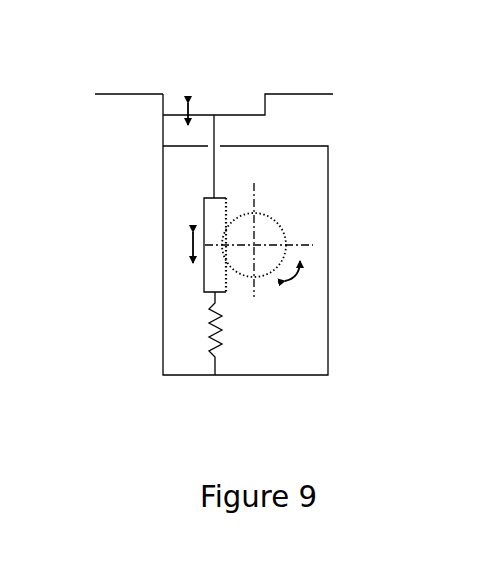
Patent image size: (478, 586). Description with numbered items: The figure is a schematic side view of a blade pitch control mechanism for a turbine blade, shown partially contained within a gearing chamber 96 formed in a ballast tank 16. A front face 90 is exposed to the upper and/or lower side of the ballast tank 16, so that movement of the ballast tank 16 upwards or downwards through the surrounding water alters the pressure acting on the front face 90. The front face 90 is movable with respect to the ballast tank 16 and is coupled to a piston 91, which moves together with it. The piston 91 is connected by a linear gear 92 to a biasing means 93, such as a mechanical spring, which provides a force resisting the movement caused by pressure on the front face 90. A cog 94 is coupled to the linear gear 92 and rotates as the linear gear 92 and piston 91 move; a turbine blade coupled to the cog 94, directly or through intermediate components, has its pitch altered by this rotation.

The ballast tank 16 is at (132, 158).
The front face 90 is at (224, 114).
The piston 91 is at (214, 130).
The linear gear 92 is at (204, 220).
The spring 93 is at (215, 330).
The cog 94 is at (276, 222).
The gearing chamber 96 is at (328, 340).